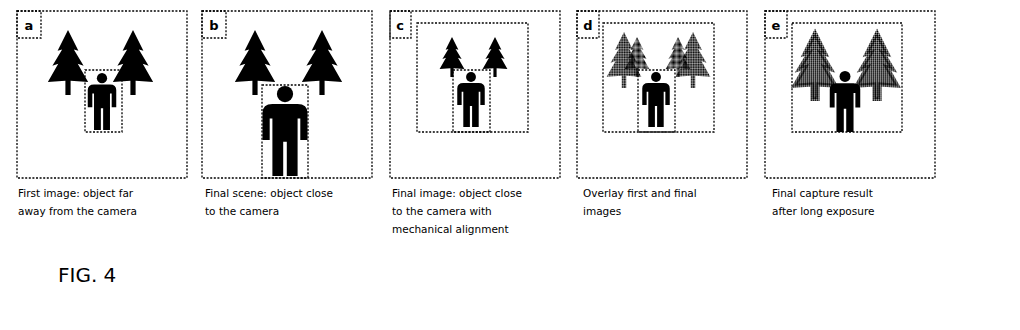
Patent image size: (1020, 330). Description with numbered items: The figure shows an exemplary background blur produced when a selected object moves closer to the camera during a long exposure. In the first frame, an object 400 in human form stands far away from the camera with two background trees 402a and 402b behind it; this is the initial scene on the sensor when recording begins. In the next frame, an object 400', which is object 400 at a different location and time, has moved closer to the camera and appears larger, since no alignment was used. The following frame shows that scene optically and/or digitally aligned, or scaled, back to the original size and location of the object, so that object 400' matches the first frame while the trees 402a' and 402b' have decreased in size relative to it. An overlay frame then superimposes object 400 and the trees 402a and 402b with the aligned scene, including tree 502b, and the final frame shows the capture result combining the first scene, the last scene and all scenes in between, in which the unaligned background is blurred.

The object 400 is at (491, 109).
The object at different location and time 400' is at (390, 124).
The tree 402a is at (438, 78).
The tree 402b is at (521, 78).
The tree 402a' is at (433, 80).
The tree 402b' is at (508, 80).
The right background tree in overlay 502b is at (710, 58).